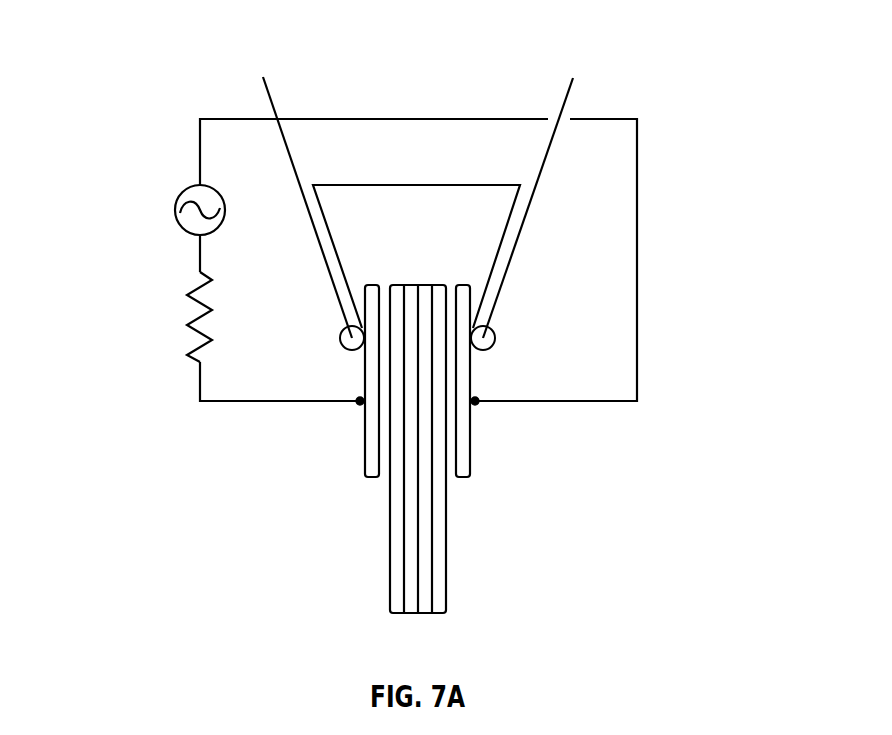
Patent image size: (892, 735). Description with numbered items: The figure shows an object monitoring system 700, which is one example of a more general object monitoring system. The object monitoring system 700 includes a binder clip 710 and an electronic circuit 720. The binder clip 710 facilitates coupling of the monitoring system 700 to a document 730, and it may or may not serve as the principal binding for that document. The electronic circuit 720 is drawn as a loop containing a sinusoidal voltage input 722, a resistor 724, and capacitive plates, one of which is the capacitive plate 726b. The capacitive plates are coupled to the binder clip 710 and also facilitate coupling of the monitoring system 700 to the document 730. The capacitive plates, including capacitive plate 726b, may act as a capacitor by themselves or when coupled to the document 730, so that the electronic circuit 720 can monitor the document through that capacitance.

The object monitoring system 700 is at (220, 58).
The binder clip 710 is at (423, 185).
The electronic circuit 720 is at (637, 245).
The sinusoidal voltage input 722 is at (176, 211).
The resistor 724 is at (188, 326).
The capacitive plate 726b is at (470, 442).
The document 730 is at (446, 545).